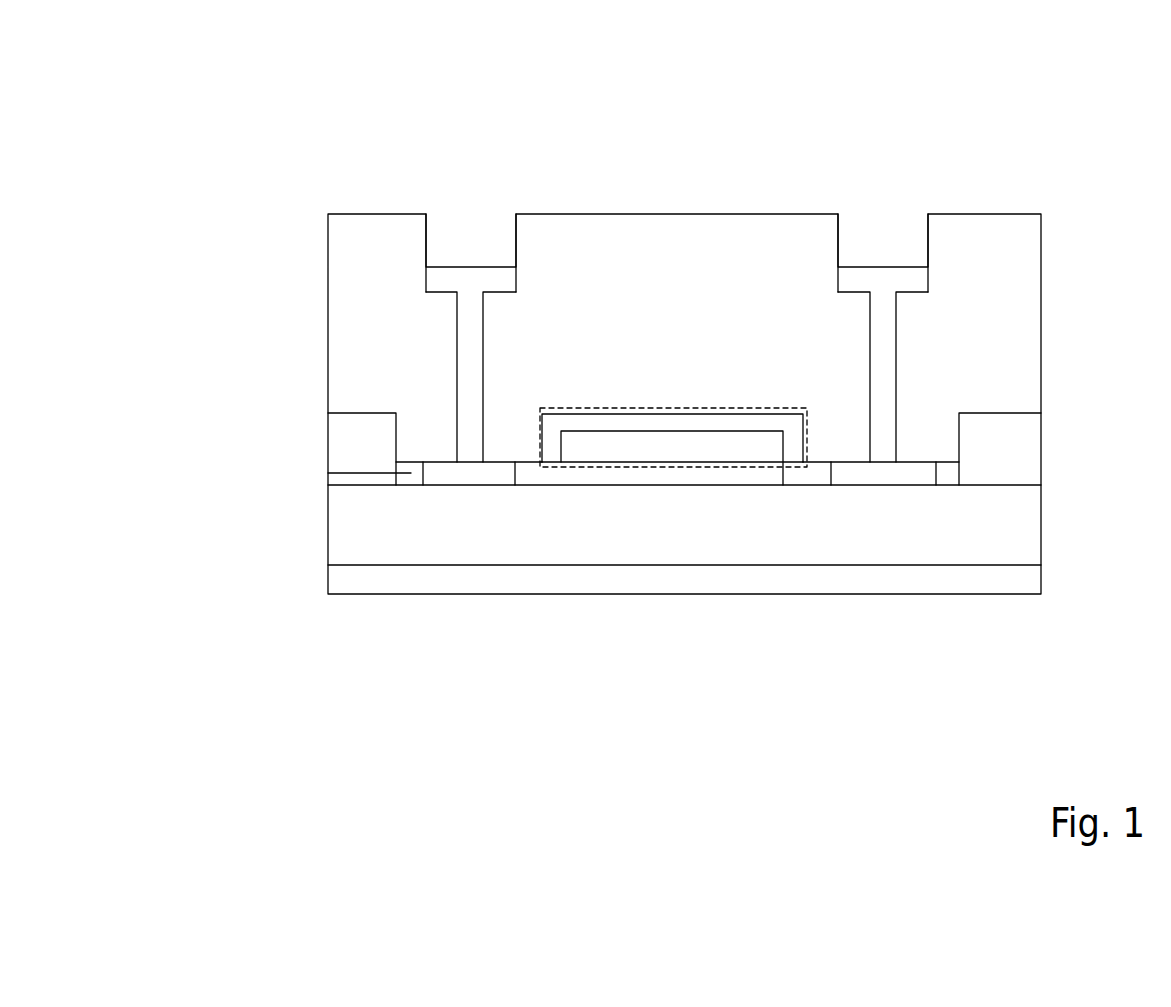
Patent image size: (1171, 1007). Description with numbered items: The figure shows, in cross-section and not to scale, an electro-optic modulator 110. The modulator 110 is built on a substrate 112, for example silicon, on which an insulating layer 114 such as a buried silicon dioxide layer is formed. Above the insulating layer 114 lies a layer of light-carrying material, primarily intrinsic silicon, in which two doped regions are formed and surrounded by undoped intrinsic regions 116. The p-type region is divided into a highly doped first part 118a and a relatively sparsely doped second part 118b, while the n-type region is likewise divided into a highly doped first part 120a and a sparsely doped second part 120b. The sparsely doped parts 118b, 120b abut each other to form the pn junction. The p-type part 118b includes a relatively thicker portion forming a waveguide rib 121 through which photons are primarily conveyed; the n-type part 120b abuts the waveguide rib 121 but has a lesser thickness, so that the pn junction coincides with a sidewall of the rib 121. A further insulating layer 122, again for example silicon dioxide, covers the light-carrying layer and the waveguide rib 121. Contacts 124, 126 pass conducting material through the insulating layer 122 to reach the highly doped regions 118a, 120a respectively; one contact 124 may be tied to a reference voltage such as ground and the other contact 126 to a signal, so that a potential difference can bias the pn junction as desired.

The electro-optic modulator 110 is at (467, 121).
The substrate 112 is at (340, 582).
The insulating layer 114 is at (335, 503).
The undoped region 116 is at (345, 445).
The first part of p-type region 118a is at (467, 485).
The second part of p-type region 118b is at (340, 473).
The first part of n-type region 120a is at (890, 478).
The second part of n-type region 120b is at (795, 478).
The waveguide rib 121 is at (681, 466).
The further insulating layer 122 is at (345, 315).
The contact 124 is at (467, 275).
The contact 126 is at (883, 270).